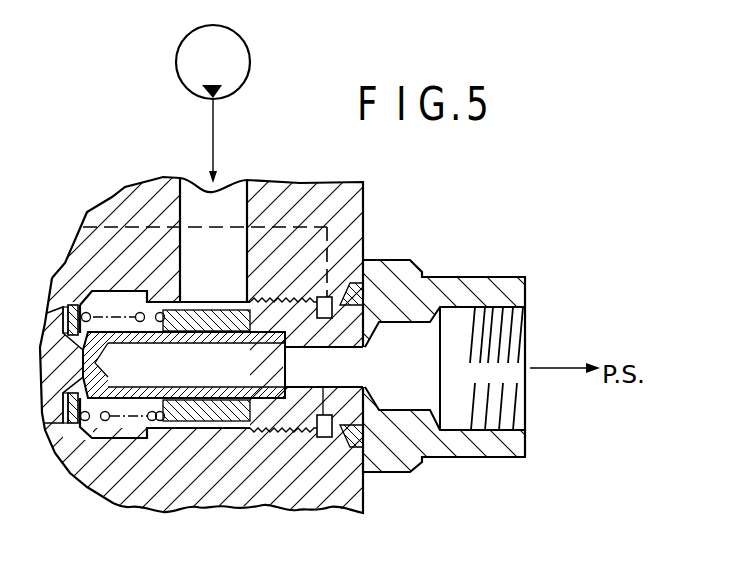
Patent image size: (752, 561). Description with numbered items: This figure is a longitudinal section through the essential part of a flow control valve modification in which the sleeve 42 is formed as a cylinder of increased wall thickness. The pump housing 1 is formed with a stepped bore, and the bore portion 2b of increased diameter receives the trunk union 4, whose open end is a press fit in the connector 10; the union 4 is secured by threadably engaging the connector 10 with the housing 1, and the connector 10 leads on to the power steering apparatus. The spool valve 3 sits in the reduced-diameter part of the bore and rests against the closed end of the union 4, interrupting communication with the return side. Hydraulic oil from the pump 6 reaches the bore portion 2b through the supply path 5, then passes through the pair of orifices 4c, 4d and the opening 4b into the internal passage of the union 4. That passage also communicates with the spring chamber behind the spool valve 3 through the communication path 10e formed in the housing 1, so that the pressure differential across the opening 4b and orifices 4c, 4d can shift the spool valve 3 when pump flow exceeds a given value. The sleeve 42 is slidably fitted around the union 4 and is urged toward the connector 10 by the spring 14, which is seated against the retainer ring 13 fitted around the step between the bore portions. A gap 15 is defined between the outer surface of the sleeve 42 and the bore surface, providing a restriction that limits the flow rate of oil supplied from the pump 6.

The pump housing 1 is at (353, 221).
The spool valve 3 is at (58, 315).
The trunk union 4 is at (224, 407).
The opening 4b is at (122, 340).
The orifice 4c is at (147, 420).
The orifice 4d is at (162, 341).
The supply path 5 is at (252, 209).
The pump 6 is at (249, 78).
The connector 10 is at (460, 277).
The communication path 10e is at (145, 223).
The retainer ring 13 is at (72, 425).
The spring 14 is at (97, 310).
The gap 15 is at (190, 297).
The bore portion 2b is at (158, 430).
The sleeve 42 is at (208, 415).